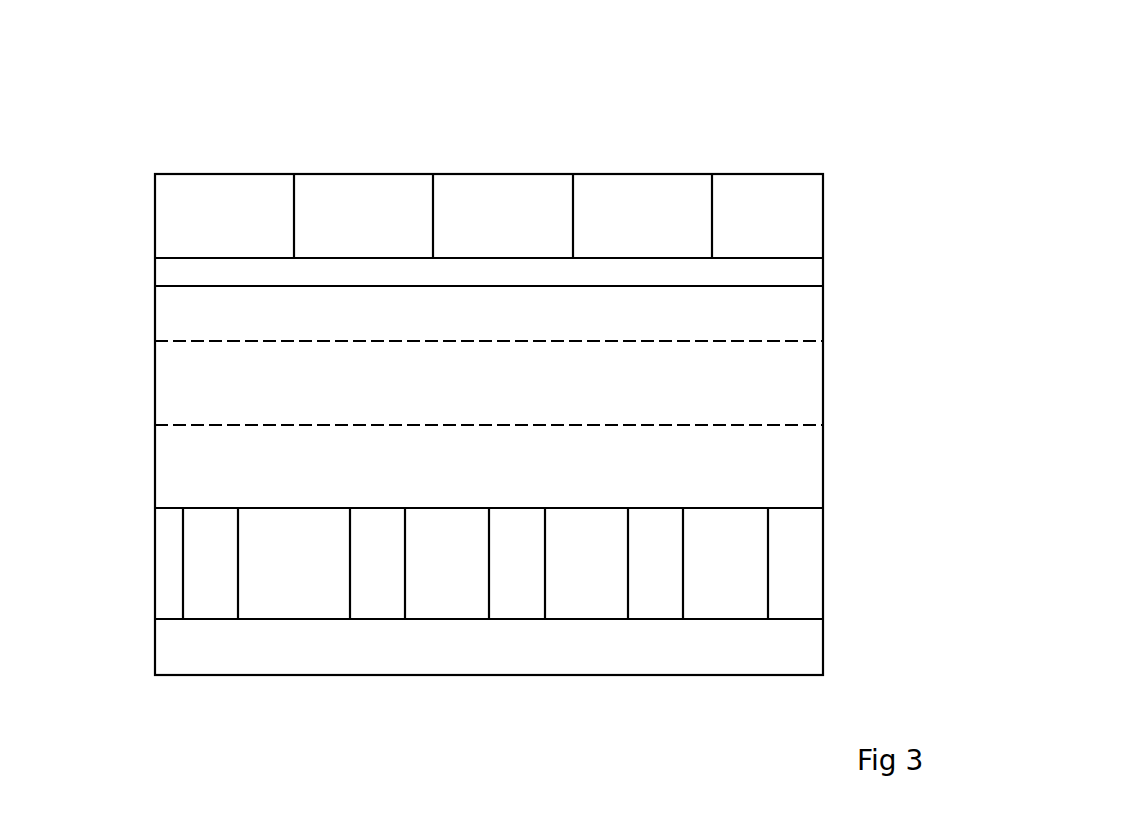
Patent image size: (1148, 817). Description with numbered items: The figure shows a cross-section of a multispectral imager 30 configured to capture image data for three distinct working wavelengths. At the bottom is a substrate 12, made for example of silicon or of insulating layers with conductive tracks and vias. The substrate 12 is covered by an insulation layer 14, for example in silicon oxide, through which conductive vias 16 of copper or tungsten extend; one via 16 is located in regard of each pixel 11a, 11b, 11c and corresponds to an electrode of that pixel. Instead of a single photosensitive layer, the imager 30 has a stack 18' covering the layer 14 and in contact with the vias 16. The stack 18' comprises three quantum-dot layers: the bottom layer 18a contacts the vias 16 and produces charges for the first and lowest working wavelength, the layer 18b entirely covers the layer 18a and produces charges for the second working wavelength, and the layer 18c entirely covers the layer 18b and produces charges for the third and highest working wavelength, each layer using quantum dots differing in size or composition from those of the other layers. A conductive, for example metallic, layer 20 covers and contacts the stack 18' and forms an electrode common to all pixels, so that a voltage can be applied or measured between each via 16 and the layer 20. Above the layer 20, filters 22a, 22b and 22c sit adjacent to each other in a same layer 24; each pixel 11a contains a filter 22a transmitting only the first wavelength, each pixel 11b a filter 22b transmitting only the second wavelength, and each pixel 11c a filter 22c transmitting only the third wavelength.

The multispectral imager 30 is at (883, 87).
The layer 24 is at (150, 215).
The filter 22a is at (492, 188).
The filter 22b is at (193, 188).
The filter 22c is at (345, 188).
The pixel 11a is at (528, 155).
The pixel 11b is at (252, 155).
The pixel 11c is at (390, 155).
The conductive layer 20 is at (793, 270).
The stack 18' is at (454, 397).
The layer 18a is at (793, 467).
The layer 18b is at (793, 382).
The layer 18c is at (793, 322).
The insulation layer 14 is at (170, 560).
The conductive via 16 is at (792, 557).
The substrate 12 is at (170, 652).